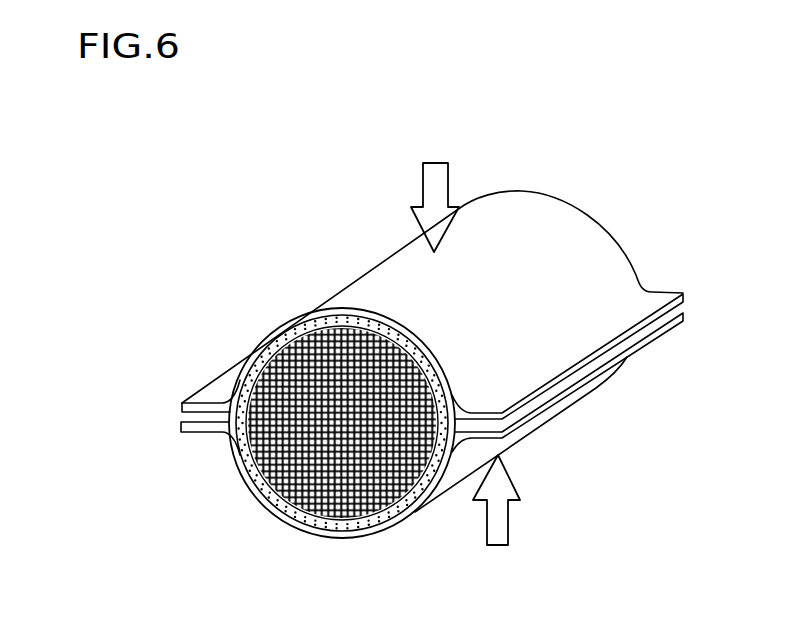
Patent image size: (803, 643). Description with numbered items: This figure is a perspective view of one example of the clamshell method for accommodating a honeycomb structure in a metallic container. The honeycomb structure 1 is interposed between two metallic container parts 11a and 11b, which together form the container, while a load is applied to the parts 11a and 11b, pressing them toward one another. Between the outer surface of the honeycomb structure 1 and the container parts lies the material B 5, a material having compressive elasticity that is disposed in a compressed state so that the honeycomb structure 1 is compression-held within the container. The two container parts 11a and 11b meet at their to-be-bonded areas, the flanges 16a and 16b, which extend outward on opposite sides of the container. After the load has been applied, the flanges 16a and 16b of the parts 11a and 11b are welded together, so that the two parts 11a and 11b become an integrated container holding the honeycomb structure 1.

The honeycomb structure 1 is at (355, 510).
The material B 5 is at (310, 530).
The metallic container part 11a is at (380, 287).
The metallic container part 11b is at (238, 478).
The flange 16a is at (183, 415).
The flange 16b is at (547, 410).